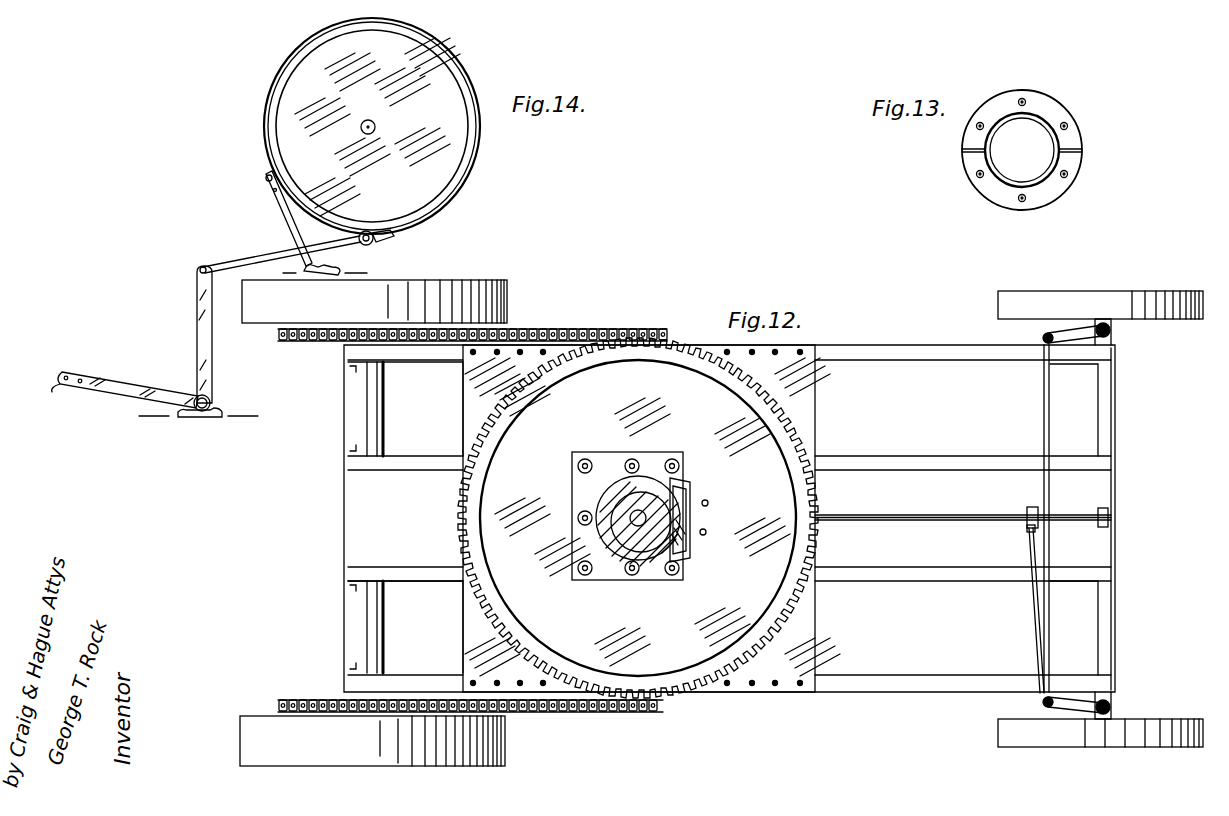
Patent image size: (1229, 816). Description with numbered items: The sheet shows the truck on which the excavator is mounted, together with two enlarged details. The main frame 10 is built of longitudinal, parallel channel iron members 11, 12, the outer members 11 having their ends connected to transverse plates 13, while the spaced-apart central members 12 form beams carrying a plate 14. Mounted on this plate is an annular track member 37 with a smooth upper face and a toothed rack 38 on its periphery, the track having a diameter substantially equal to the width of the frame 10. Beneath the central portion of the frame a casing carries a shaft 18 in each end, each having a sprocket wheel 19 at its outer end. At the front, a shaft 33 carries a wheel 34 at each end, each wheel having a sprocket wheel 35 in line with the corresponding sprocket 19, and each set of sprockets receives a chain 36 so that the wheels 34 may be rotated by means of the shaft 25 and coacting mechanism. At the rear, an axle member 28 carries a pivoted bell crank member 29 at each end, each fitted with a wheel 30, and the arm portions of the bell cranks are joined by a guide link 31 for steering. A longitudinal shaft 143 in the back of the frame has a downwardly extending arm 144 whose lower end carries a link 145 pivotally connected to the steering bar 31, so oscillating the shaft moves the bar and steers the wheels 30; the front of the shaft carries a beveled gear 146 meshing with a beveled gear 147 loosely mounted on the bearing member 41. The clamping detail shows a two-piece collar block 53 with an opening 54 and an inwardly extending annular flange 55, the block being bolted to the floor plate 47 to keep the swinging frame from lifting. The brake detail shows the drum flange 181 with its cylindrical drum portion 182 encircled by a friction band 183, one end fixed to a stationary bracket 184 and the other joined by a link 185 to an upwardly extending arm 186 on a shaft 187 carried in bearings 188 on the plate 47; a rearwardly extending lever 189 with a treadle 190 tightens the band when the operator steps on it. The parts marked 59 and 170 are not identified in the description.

In FIG. 12, the main frame 10 is at (920, 692).
In FIG. 12, the channel iron members 11 is at (729, 521).
In FIG. 12, the channel iron members 12 is at (729, 520).
In FIG. 12, the transverse plates 13 is at (1124, 604).
In FIG. 12, the plate 14 is at (661, 524).
In FIG. 12, the shaft 18 is at (650, 675).
In FIG. 12, the sprocket wheel 19 is at (640, 706).
In FIG. 12, the shaft 25 is at (620, 545).
In FIG. 12, the axle member 28 is at (1122, 708).
In FIG. 12, the bell crank member 29 is at (1122, 697).
In FIG. 12, the wheel 30 is at (1100, 519).
In FIG. 12, the guide link 31 is at (1050, 425).
In FIG. 12, the shaft 33 is at (397, 630).
In FIG. 12, the wheel 34 is at (373, 523).
In FIG. 12, the sprocket wheel 35 is at (321, 732).
In FIG. 12, the chain 36 is at (570, 726).
In FIG. 12, the annular track member 37 is at (812, 436).
In FIG. 12, the toothed rack 38 is at (828, 545).
In FIG. 12, the bearing member 41 is at (690, 492).
In FIG. 14, the plate 47 is at (250, 411).
In FIG. 13, the collar block 53 is at (1088, 178).
In FIG. 13, the opening 54 is at (1022, 150).
In FIG. 13, the annular flange 55 is at (982, 161).
In FIG. 12, the bearing plate 59 is at (600, 575).
In FIG. 12, the shaft 143 is at (925, 518).
In FIG. 12, the arm 144 is at (1028, 507).
In FIG. 12, the link 145 is at (1032, 628).
In FIG. 12, the beveled gear 146 is at (707, 537).
In FIG. 12, the beveled gear 147 is at (667, 555).
In FIG. 14, the hub 170 is at (375, 124).
In FIG. 14, the flange 181 is at (372, 126).
In FIG. 14, the drum portion 182 is at (462, 172).
In FIG. 14, the friction band 183 is at (420, 218).
In FIG. 14, the stationary bracket 184 is at (284, 212).
In FIG. 14, the link 185 is at (276, 251).
In FIG. 14, the arm 186 is at (197, 335).
In FIG. 14, the shaft 187 is at (211, 400).
In FIG. 14, the bearings 188 is at (205, 418).
In FIG. 14, the lever 189 is at (159, 371).
In FIG. 14, the treadle 190 is at (62, 391).